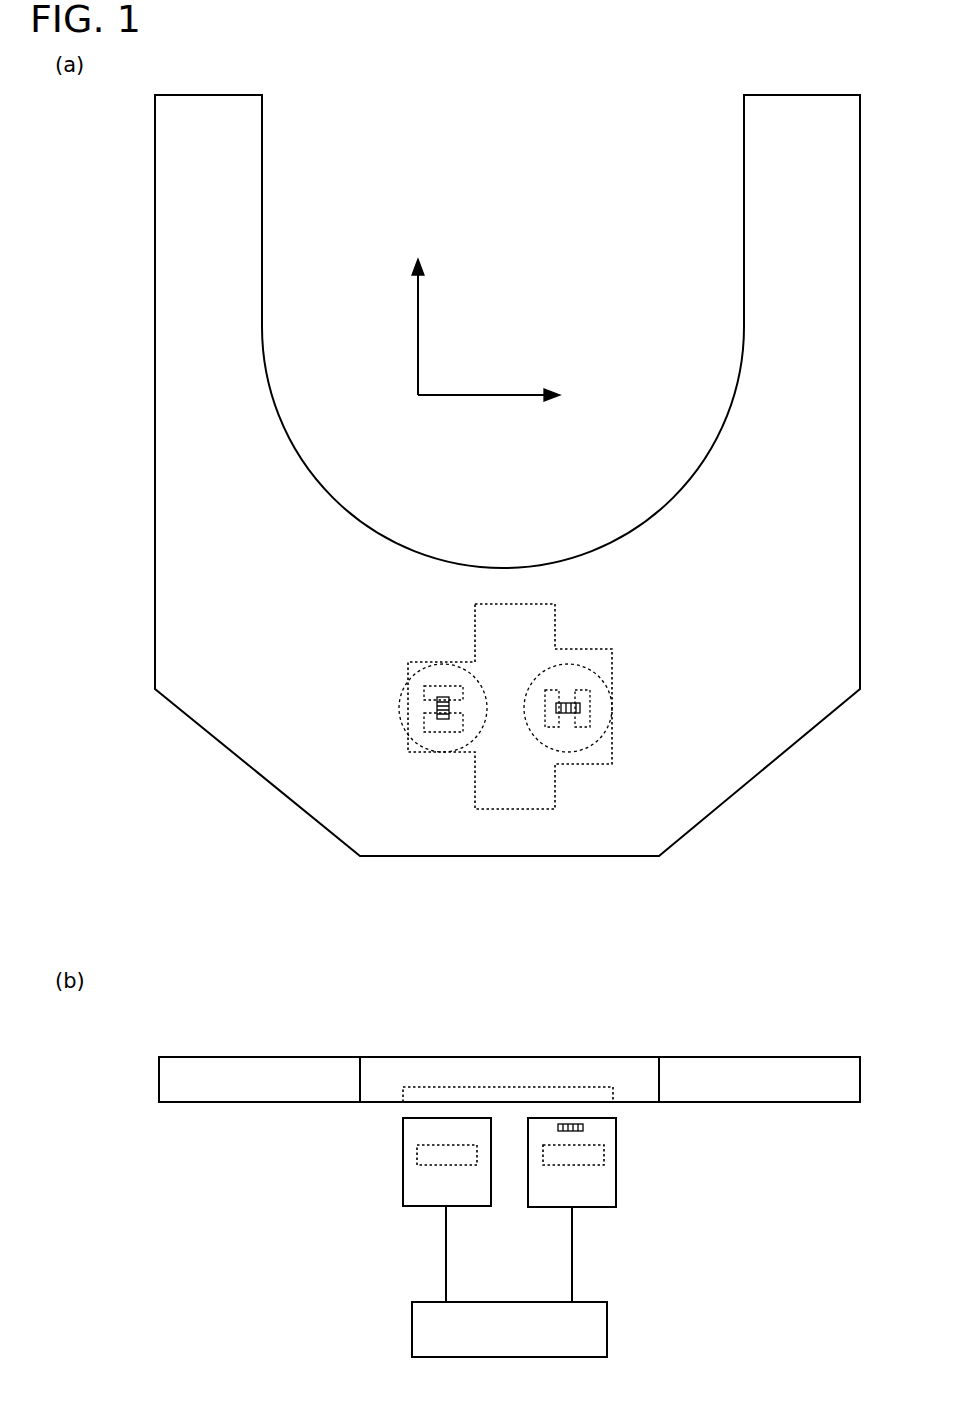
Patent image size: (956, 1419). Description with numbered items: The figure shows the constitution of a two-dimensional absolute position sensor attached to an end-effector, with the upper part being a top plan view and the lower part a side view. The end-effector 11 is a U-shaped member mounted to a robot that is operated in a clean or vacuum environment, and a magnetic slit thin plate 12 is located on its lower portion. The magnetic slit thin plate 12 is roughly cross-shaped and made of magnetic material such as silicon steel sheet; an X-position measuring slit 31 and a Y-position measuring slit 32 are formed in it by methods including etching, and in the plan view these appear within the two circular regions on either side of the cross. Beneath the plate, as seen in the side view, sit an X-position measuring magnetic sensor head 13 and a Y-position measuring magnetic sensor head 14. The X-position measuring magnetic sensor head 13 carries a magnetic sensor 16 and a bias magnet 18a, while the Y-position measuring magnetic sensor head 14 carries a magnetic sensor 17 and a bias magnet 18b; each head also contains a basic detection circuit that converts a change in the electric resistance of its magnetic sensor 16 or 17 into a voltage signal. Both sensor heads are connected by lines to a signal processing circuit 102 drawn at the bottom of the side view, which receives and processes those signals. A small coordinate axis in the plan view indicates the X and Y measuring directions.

The end-effector 11 is at (758, 292).
The magnetic slit thin plate 12 is at (488, 767).
The X-position measuring magnetic sensor head 13 is at (605, 1187).
The Y-position measuring magnetic sensor head 14 is at (410, 1180).
The magnetic sensor 16 is at (568, 705).
The magnetic sensor 17 is at (445, 707).
The bias magnet 18a is at (605, 1154).
The bias magnet 18b is at (417, 1155).
The X-position measuring slit 31 is at (552, 690).
The Y-position measuring slit 32 is at (428, 683).
The signal processing circuit 102 is at (509, 1329).